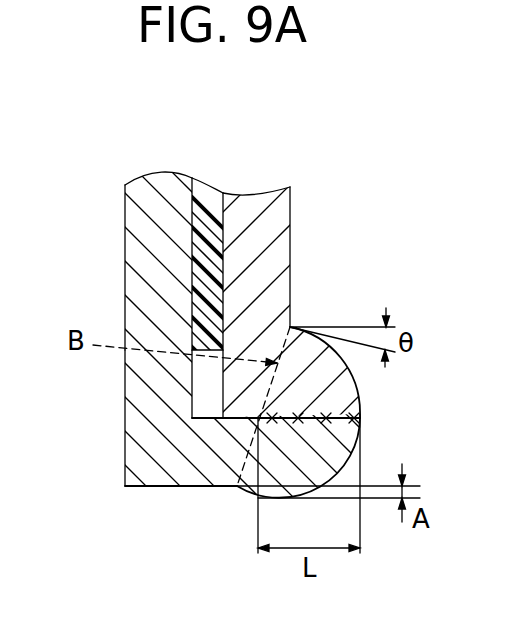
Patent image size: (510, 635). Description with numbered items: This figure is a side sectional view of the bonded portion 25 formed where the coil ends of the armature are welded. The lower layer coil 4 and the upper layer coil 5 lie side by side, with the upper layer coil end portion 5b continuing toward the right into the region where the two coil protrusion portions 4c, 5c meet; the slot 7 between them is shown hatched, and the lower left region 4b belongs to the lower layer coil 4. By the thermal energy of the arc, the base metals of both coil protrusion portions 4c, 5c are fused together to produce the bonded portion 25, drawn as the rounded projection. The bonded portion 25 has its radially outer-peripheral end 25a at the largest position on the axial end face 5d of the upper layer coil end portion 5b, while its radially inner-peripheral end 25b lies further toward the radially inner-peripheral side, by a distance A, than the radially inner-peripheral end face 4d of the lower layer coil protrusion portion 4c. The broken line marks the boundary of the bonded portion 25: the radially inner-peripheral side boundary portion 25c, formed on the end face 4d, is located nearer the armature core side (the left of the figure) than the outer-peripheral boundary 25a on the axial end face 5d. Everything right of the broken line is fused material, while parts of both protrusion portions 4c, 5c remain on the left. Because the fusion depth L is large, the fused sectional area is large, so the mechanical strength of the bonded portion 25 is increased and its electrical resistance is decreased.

The lower layer coil 4 is at (223, 367).
The upper wall portion of base member 4b is at (140, 213).
The lower layer coil protrusion portion 4c is at (150, 442).
The radially inner-peripheral end face 4d is at (162, 488).
The upper layer coil 5 is at (224, 330).
The upper layer coil end portion 5b is at (270, 250).
The upper layer coil protrusion portion 5c is at (247, 380).
The axial end face 5d is at (290, 272).
The weld / filled slot 7 is at (207, 212).
The bonded portion 25 is at (308, 448).
The radially outer-peripheral end 25a is at (290, 327).
The radially inner-peripheral end 25b is at (272, 498).
The radially inner-peripheral side boundary portion 25c is at (237, 488).